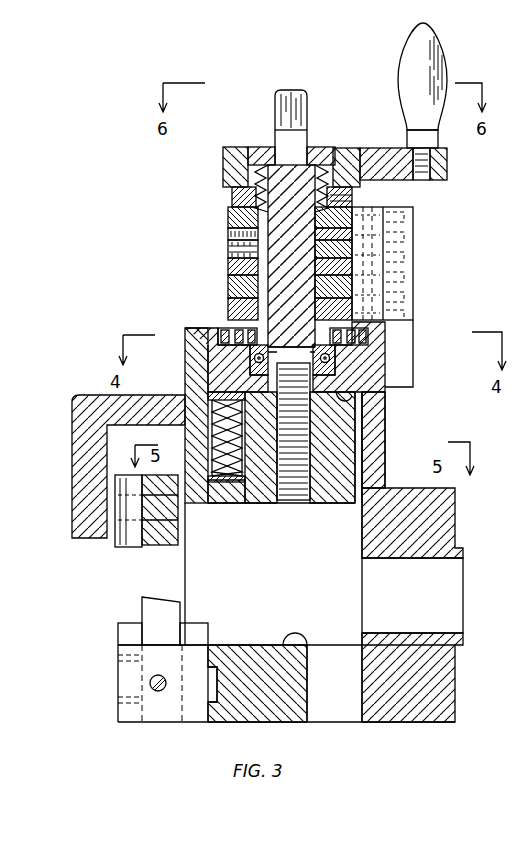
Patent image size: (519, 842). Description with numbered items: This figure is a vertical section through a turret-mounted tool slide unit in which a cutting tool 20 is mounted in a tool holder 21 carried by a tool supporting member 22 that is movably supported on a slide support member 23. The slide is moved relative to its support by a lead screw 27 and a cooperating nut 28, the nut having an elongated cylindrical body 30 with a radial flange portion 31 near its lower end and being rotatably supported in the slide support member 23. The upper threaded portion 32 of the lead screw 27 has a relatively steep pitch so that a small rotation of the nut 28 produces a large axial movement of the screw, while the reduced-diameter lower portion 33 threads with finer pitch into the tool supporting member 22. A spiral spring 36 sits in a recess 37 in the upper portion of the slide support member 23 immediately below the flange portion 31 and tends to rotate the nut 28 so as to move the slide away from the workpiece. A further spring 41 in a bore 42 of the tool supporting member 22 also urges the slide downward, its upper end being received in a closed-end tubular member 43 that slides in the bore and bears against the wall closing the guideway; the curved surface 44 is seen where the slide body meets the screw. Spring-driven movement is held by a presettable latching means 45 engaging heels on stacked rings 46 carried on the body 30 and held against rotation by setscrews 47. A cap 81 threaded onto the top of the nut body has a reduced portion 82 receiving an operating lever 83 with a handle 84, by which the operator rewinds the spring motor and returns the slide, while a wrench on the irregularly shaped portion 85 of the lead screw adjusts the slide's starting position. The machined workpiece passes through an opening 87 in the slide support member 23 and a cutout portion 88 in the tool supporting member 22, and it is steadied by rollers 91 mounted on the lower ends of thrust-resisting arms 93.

The cutting tool 20 is at (155, 608).
The tool holder 21 is at (132, 638).
The tool supporting member 22 is at (226, 718).
The slide support member 23 is at (457, 518).
The lead screw 27 is at (278, 268).
The nut 28 is at (262, 219).
The cylindrical body 30 is at (262, 305).
The radial flange portion 31 is at (363, 328).
The threaded portion 32 is at (317, 196).
The lower portion 33 is at (305, 424).
The spiral spring 36 is at (365, 340).
The recess 37 is at (218, 340).
The spring 41 is at (235, 503).
The bore 42 is at (228, 503).
The tubular member 43 is at (210, 397).
The bore 44 is at (345, 396).
The presettable latching means 45 is at (424, 247).
The stacked rings 46 is at (230, 215).
The setscrews 47 is at (230, 252).
The cap 81 is at (228, 196).
The reduced portion 82 is at (266, 147).
The operating lever 83 is at (372, 150).
The handle 84 is at (417, 80).
The irregularly shaped portion 85 is at (303, 112).
The opening 87 is at (437, 565).
The cutout portion 88 is at (300, 637).
The rollers 91 is at (118, 550).
The arms 93 is at (163, 550).